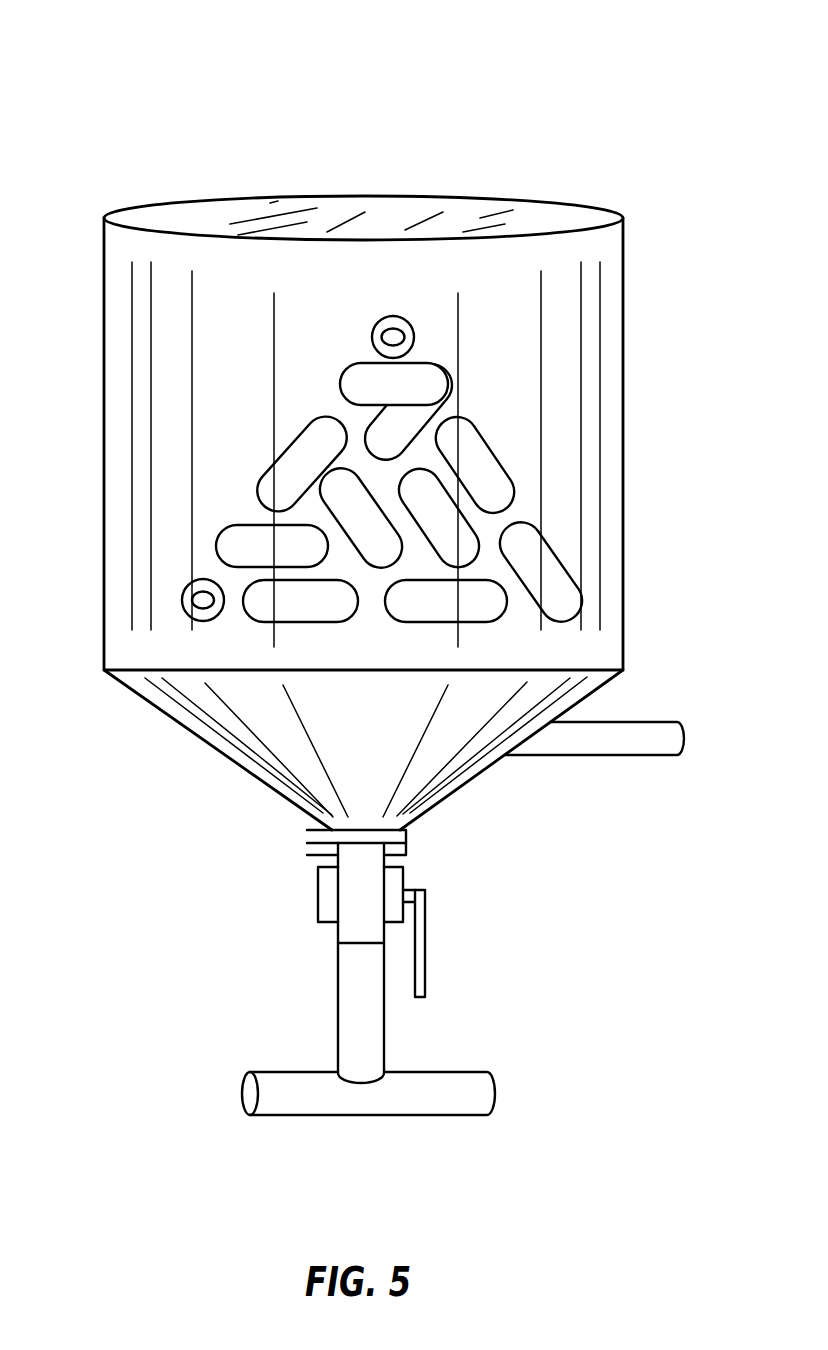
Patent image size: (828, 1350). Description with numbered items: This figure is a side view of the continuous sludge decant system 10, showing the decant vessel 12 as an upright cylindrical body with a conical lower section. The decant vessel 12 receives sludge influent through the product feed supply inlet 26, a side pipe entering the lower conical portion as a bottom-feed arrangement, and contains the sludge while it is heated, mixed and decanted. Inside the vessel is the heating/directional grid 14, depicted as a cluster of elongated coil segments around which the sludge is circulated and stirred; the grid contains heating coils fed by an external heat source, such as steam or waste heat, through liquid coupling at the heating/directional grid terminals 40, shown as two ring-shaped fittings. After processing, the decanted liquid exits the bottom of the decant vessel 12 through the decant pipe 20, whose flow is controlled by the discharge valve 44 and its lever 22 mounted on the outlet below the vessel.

The continuous sludge decant system 10 is at (89, 86).
The decant vessel 12 is at (108, 253).
The heating/directional grid 14 is at (495, 460).
The heating/directional grid terminals 40 is at (411, 341).
The product feed supply inlet 26 is at (590, 748).
The discharge valve 44 is at (325, 912).
The lever 22 is at (420, 967).
The decant pipe 20 is at (357, 1040).